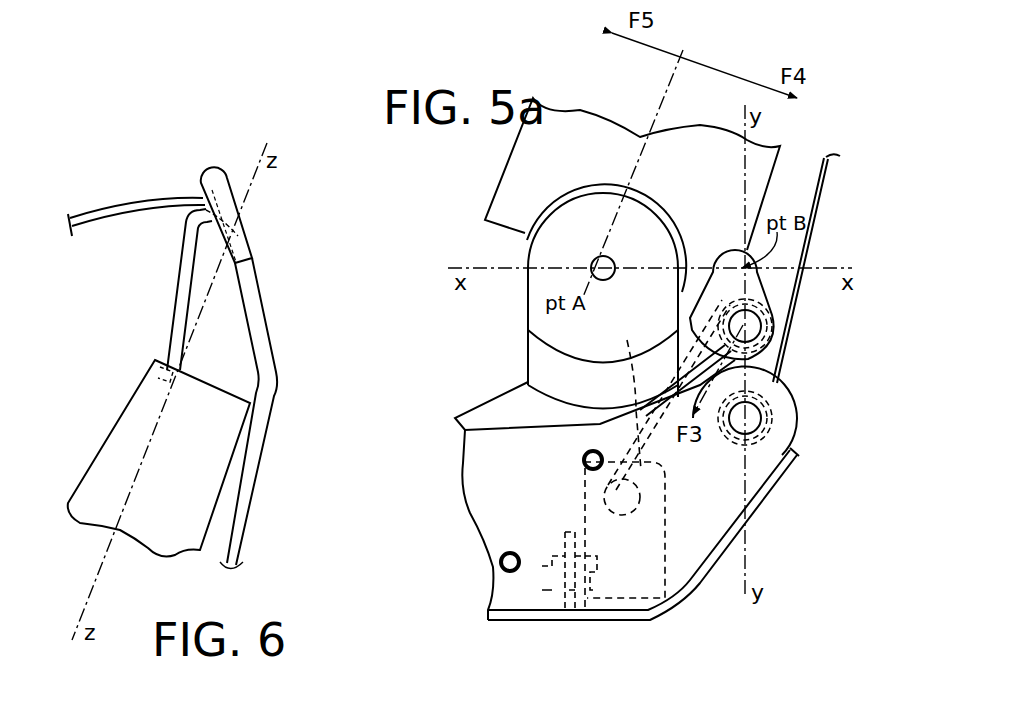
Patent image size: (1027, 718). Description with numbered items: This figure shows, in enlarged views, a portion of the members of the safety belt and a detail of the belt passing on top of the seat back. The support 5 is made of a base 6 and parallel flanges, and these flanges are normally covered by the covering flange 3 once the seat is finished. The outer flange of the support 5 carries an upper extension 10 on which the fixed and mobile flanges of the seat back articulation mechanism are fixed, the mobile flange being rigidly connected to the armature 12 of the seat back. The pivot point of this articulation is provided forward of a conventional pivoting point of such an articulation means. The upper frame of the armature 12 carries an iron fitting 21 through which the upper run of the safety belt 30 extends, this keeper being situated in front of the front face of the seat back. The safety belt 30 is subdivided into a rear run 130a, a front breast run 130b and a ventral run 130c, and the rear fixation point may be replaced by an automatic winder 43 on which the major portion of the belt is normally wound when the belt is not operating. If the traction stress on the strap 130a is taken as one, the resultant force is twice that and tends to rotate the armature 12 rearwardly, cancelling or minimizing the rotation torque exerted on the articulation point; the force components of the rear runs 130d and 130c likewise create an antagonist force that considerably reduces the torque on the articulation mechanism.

In FIG. 5A, the covering flange 3 is at (710, 507).
In FIG. 5A, the support 5 is at (768, 492).
In FIG. 5A, the base 6 is at (550, 620).
In FIG. 5A, the upper extension 10 is at (585, 215).
In FIG. 6, the armature of the seat back 12 is at (125, 455).
In FIG. 5A, the armature of the seat back 12 is at (617, 143).
In FIG. 6, the iron fitting 21 is at (183, 318).
In FIG. 6, the safety belt 30 is at (203, 354).
In FIG. 5A, the safety belt 30 is at (739, 312).
In FIG. 5A, the automatic winder 43 is at (673, 617).
In FIG. 6, the rear run 130a is at (235, 545).
In FIG. 5A, the rear run 130a is at (793, 315).
In FIG. 6, the front breast run 130b is at (90, 226).
In FIG. 5A, the ventral run 130c is at (628, 393).
In FIG. 5A, the rear run 130d is at (792, 393).